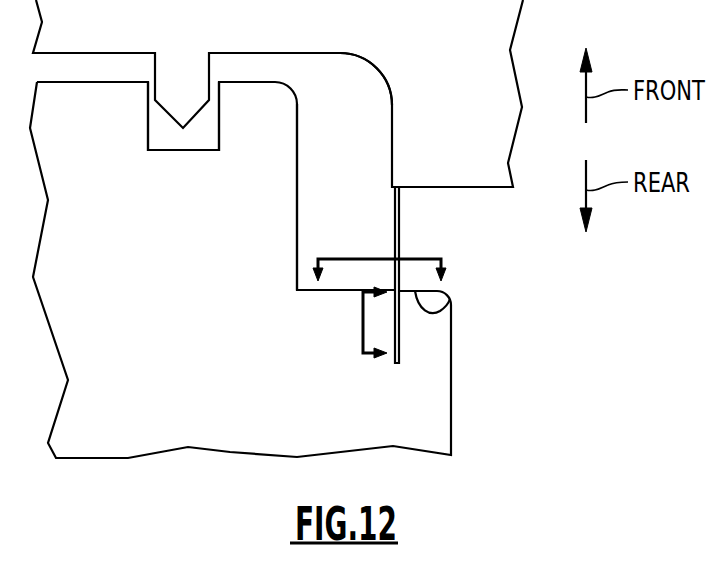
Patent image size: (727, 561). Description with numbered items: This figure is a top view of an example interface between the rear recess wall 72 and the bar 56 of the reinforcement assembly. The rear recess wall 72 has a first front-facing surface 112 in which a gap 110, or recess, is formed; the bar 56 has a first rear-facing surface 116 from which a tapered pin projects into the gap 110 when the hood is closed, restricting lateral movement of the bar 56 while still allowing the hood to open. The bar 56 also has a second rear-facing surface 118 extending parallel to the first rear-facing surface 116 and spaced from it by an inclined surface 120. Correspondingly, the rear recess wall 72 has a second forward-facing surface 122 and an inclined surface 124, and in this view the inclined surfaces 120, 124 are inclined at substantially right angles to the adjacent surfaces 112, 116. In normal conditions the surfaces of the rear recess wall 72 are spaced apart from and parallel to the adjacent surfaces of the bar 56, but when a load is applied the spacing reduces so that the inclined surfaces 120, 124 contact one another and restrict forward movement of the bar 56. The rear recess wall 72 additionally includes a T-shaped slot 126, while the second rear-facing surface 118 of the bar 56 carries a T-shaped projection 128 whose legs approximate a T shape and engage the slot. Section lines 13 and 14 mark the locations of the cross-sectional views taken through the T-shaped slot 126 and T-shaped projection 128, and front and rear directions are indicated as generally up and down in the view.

The bar 56 is at (466, 58).
The rear recess wall 72 is at (234, 279).
The gap 110 is at (170, 137).
The first front-facing surface 112 is at (117, 82).
The first rear-facing surface 116 is at (120, 55).
The second rear-facing surface 118 is at (428, 187).
The inclined surface 120 is at (392, 105).
The second forward-facing surface 122 is at (444, 303).
The inclined surface 124 is at (297, 172).
The T-shaped slot 126 is at (348, 305).
The T-shaped projection 128 is at (400, 216).
The section line 13- 13 is at (380, 254).
The section line 14- 14 is at (361, 322).